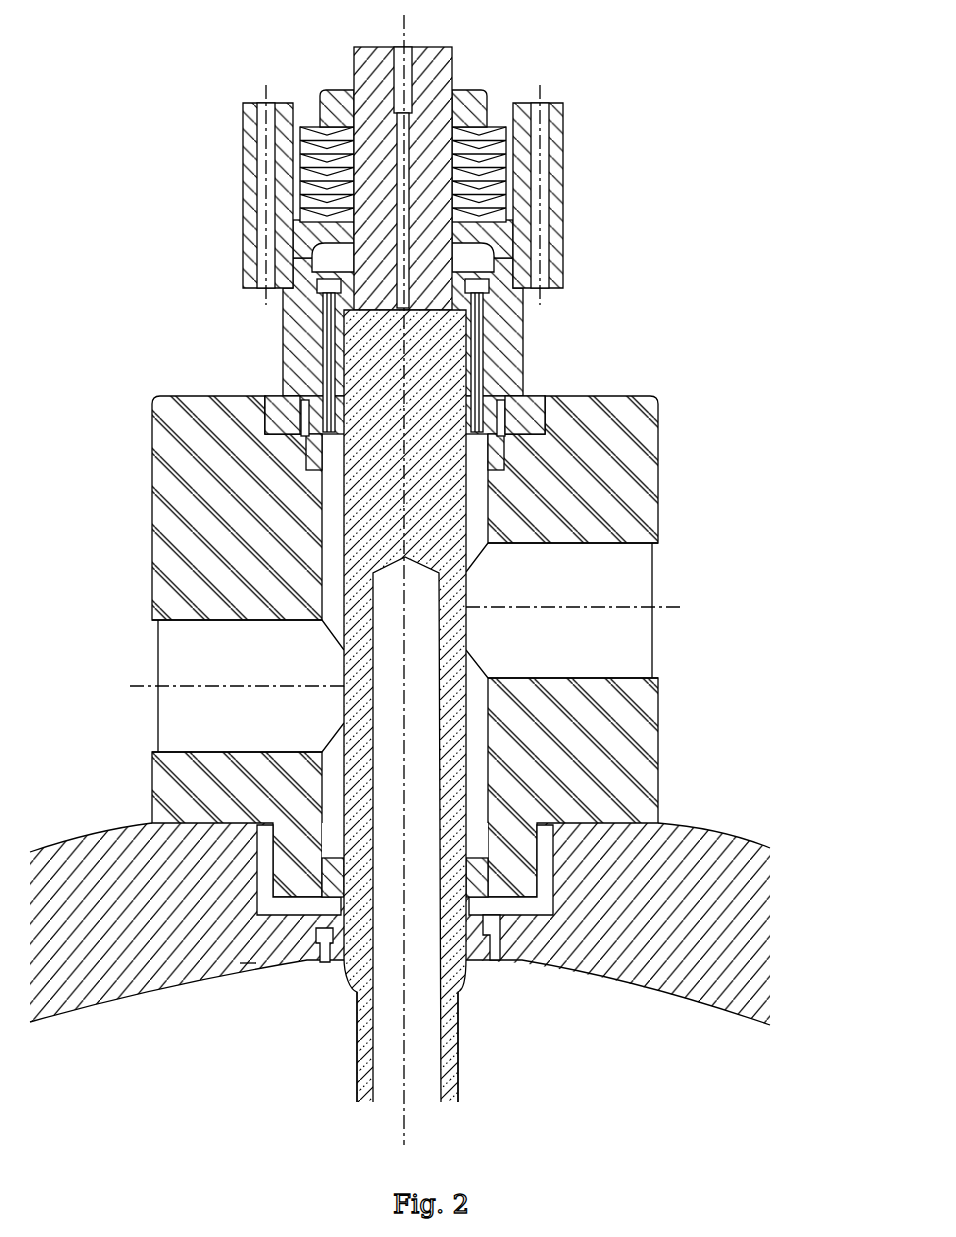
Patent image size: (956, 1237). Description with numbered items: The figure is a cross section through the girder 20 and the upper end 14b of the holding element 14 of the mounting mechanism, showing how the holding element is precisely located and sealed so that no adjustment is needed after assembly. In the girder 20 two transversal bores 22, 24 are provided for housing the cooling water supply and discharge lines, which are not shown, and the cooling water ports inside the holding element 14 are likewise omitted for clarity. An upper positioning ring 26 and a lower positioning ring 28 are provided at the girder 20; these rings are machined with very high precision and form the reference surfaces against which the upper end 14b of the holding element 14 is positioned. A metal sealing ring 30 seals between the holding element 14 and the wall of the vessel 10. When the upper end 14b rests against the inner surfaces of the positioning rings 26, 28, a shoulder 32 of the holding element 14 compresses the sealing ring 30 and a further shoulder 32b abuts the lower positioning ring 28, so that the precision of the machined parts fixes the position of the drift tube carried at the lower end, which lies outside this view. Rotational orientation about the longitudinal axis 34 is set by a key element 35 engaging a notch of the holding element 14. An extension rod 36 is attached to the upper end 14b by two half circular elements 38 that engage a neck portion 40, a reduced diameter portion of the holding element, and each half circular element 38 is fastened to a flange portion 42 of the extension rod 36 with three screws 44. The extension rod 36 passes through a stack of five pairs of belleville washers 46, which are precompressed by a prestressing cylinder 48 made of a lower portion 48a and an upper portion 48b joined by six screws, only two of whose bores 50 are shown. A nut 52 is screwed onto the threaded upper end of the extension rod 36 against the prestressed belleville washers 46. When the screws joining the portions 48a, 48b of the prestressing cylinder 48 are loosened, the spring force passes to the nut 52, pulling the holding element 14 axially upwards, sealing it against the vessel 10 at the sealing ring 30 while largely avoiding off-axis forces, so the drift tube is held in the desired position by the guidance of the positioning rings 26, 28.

The vessel 10 is at (706, 848).
The holding element 14 is at (457, 1086).
The upper end of holding element 14b is at (422, 464).
The girder 20 is at (400, 634).
The transversal bore 22 is at (165, 712).
The transversal bore 24 is at (660, 662).
The upper positioning ring 26 is at (517, 412).
The lower positioning ring 28 is at (505, 917).
The metal sealing ring 30 is at (318, 948).
The shoulder 32 is at (342, 932).
The further shoulder 32b is at (247, 963).
The longitudinal axis 34 is at (405, 22).
The key element 35 is at (272, 398).
The extension rod 36 is at (434, 157).
The half circular elements 38 is at (300, 376).
The neck portion 40 is at (429, 726).
The flange portion 42 is at (488, 265).
The screws 44 is at (322, 326).
The belleville washers 46 is at (506, 200).
The prestressing cylinder 48 is at (443, 170).
The lower portion of prestressing cylinder 48a is at (564, 272).
The upper portion of prestressing cylinder 48b is at (564, 150).
The bores 50 is at (266, 102).
The nut 52 is at (333, 90).